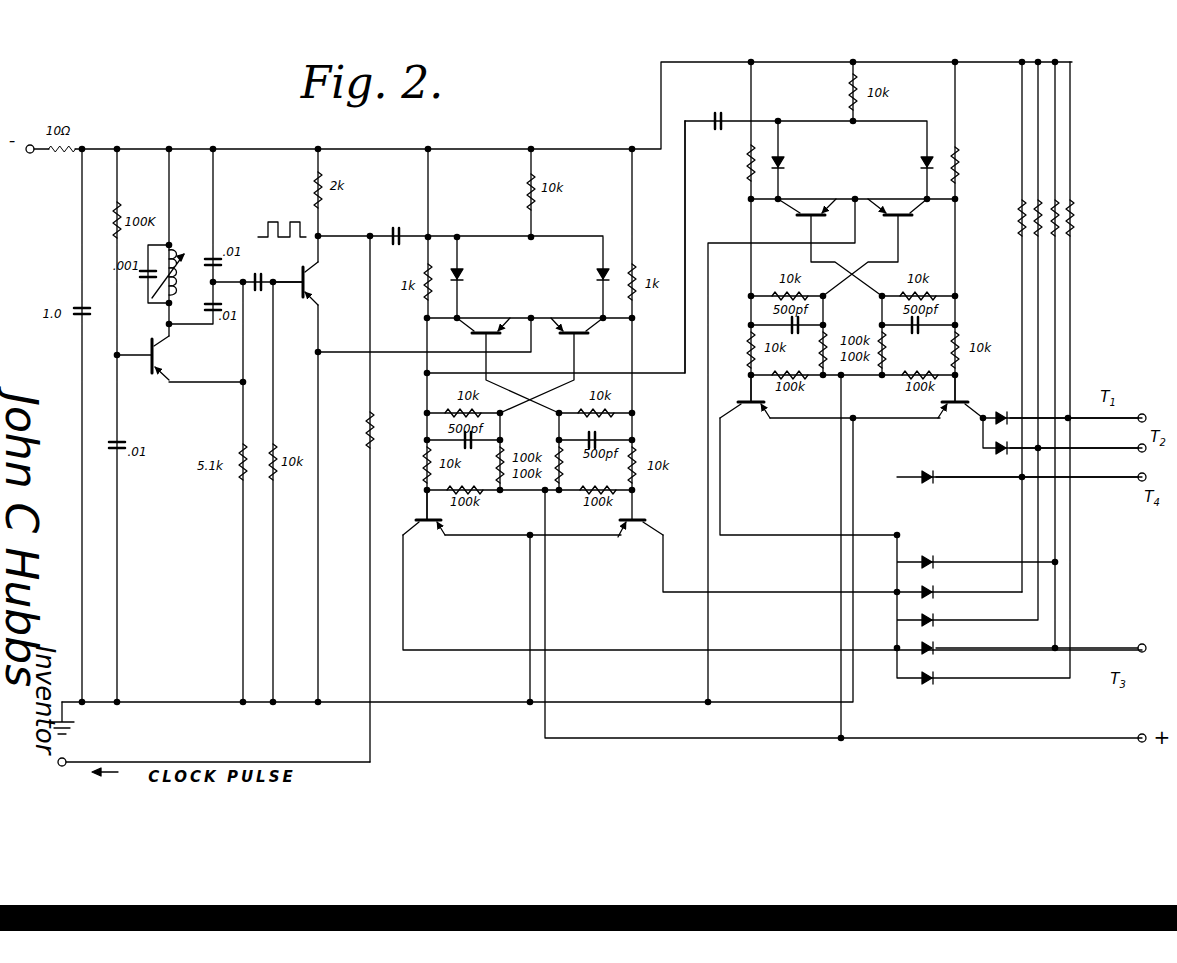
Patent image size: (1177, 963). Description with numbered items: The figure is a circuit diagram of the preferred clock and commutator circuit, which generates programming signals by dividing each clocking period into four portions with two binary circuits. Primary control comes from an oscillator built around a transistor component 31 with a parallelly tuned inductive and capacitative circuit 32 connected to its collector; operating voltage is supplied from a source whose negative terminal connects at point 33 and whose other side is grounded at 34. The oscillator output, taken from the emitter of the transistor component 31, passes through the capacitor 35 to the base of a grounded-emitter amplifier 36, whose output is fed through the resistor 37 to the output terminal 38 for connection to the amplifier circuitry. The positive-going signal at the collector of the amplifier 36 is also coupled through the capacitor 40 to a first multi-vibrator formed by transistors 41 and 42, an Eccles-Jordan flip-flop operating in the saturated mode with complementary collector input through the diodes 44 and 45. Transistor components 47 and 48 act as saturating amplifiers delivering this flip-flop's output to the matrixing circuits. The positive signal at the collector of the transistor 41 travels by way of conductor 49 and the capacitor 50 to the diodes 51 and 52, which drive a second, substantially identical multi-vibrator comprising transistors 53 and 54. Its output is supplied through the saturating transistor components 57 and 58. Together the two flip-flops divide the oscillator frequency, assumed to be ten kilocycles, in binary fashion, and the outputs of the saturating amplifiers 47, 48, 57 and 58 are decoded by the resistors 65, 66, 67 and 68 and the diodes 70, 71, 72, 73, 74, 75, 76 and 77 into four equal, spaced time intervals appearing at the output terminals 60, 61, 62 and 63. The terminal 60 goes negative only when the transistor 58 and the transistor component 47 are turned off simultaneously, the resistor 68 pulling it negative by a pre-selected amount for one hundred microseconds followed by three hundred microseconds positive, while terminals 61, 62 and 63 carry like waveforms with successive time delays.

The transistor component 31 is at (160, 352).
The parallelly tuned inductive and capacitative circuit 32 is at (176, 250).
The point 33 is at (31, 156).
The ground 34 is at (60, 700).
The capacitor 35 is at (259, 293).
The grounded-emitter amplifier 36 is at (312, 285).
The resistor 37 is at (375, 412).
The output terminal 38 is at (67, 758).
The capacitor 40 is at (400, 228).
The transistor 41 is at (487, 316).
The transistor 42 is at (575, 318).
The diode 44 is at (465, 275).
The diode 45 is at (595, 277).
The transistor component 47 is at (430, 540).
The transistor component 48 is at (632, 540).
The conductor 49 is at (686, 200).
The capacitor 50 is at (727, 104).
The diode 51 is at (787, 163).
The diode 52 is at (918, 165).
The transistor 53 is at (813, 212).
The transistor 54 is at (899, 212).
The saturating transistor component 57 is at (754, 408).
The saturating transistor component 58 is at (953, 408).
The output terminal 60 is at (1136, 422).
The output terminal 61 is at (1136, 452).
The output terminal 62 is at (1140, 643).
The output terminal 63 is at (1136, 482).
The resistor 65 is at (1019, 216).
The resistor 66 is at (1034, 236).
The resistor 67 is at (1060, 200).
The resistor 68 is at (1076, 222).
The diode 70 is at (1003, 411).
The diode 71 is at (995, 453).
The diode 72 is at (930, 486).
The diode 73 is at (931, 555).
The diode 74 is at (917, 589).
The diode 75 is at (938, 624).
The diode 76 is at (938, 652).
The diode 77 is at (928, 686).